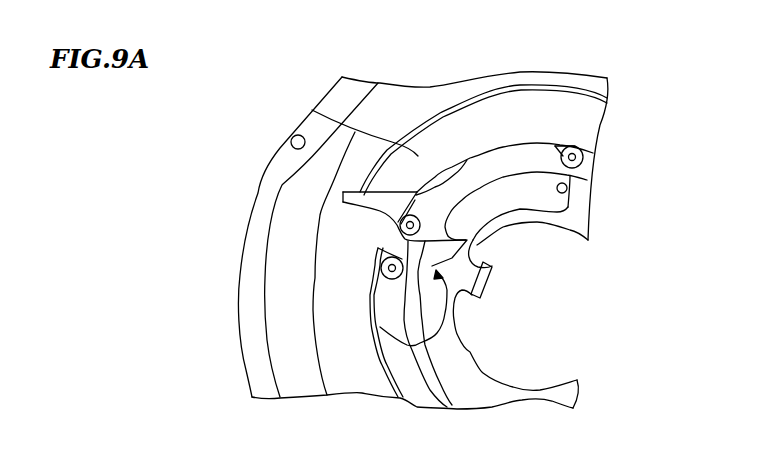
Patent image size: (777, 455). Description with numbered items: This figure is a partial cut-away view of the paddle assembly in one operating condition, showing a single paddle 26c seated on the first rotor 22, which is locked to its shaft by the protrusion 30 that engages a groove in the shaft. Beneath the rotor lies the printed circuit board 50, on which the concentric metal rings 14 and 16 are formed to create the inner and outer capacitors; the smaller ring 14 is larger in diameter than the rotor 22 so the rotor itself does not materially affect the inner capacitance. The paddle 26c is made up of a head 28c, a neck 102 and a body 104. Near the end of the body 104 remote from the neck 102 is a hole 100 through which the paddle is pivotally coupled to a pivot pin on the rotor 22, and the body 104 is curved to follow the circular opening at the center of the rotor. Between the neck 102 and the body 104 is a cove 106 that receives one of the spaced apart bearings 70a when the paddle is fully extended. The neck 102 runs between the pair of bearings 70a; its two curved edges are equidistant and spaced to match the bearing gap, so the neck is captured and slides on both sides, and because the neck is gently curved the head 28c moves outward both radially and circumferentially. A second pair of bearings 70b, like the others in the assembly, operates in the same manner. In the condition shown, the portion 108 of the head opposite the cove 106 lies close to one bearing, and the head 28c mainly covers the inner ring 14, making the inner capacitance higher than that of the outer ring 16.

The inner concentric metal ring 14 is at (312, 110).
The outer concentric metal ring 16 is at (290, 252).
The first rotor 22 is at (482, 382).
The paddle 26c is at (388, 355).
The head 28c is at (320, 310).
The protrusion 30 is at (495, 272).
The printed circuit board 50 is at (258, 193).
The spaced apart bearings 70a is at (342, 196).
The second lever 70b is at (555, 146).
The hole 100 is at (567, 188).
The neck 102 is at (380, 327).
The body 104 is at (507, 173).
The cove 106 is at (473, 240).
The portion of the head 108 is at (462, 150).